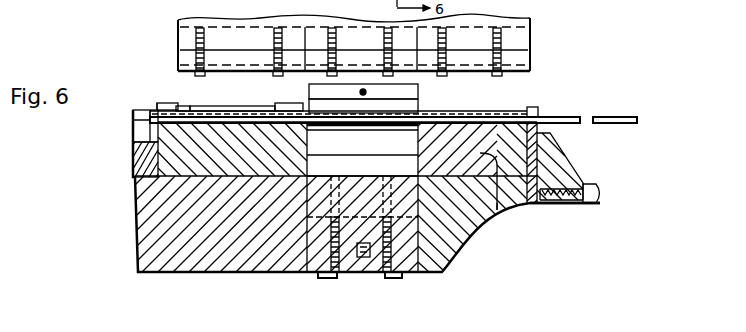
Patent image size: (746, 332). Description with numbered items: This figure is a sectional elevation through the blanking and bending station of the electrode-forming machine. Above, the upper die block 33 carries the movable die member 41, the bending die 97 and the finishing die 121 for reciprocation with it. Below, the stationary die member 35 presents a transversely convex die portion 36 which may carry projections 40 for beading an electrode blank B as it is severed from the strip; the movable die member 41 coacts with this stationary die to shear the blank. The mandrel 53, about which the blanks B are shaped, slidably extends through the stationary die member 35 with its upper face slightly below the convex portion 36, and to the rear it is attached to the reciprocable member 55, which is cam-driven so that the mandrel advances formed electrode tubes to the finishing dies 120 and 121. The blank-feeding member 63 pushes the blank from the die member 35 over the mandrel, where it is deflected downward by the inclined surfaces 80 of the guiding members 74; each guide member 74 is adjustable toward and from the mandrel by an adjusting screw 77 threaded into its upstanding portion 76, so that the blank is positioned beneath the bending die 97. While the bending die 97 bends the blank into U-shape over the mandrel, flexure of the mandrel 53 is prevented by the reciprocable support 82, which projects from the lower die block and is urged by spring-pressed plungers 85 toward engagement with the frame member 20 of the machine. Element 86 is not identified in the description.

The upper die block 33 is at (354, 38).
The movable die member 41 is at (244, 63).
The bending die 97 is at (360, 52).
The finishing die 121 is at (469, 52).
The frame member 20 is at (152, 225).
The stationary die member 35 is at (147, 187).
The reciprocable member 55 is at (143, 128).
The inclined surfaces 80 is at (300, 139).
The recess floor 86 is at (268, 182).
The reciprocable support 82 is at (296, 181).
The spring-pressed plungers 85 is at (348, 279).
The finishing die 120 is at (503, 212).
The mandrel 53 is at (580, 117).
The convex die portion 36 is at (212, 110).
The electrode blank B is at (228, 108).
The projections 40 is at (198, 108).
The blank-feeding member 63 is at (158, 104).
The guiding member 74 is at (316, 104).
The upstanding portion 76 is at (419, 91).
The adjusting screw 77 is at (367, 92).